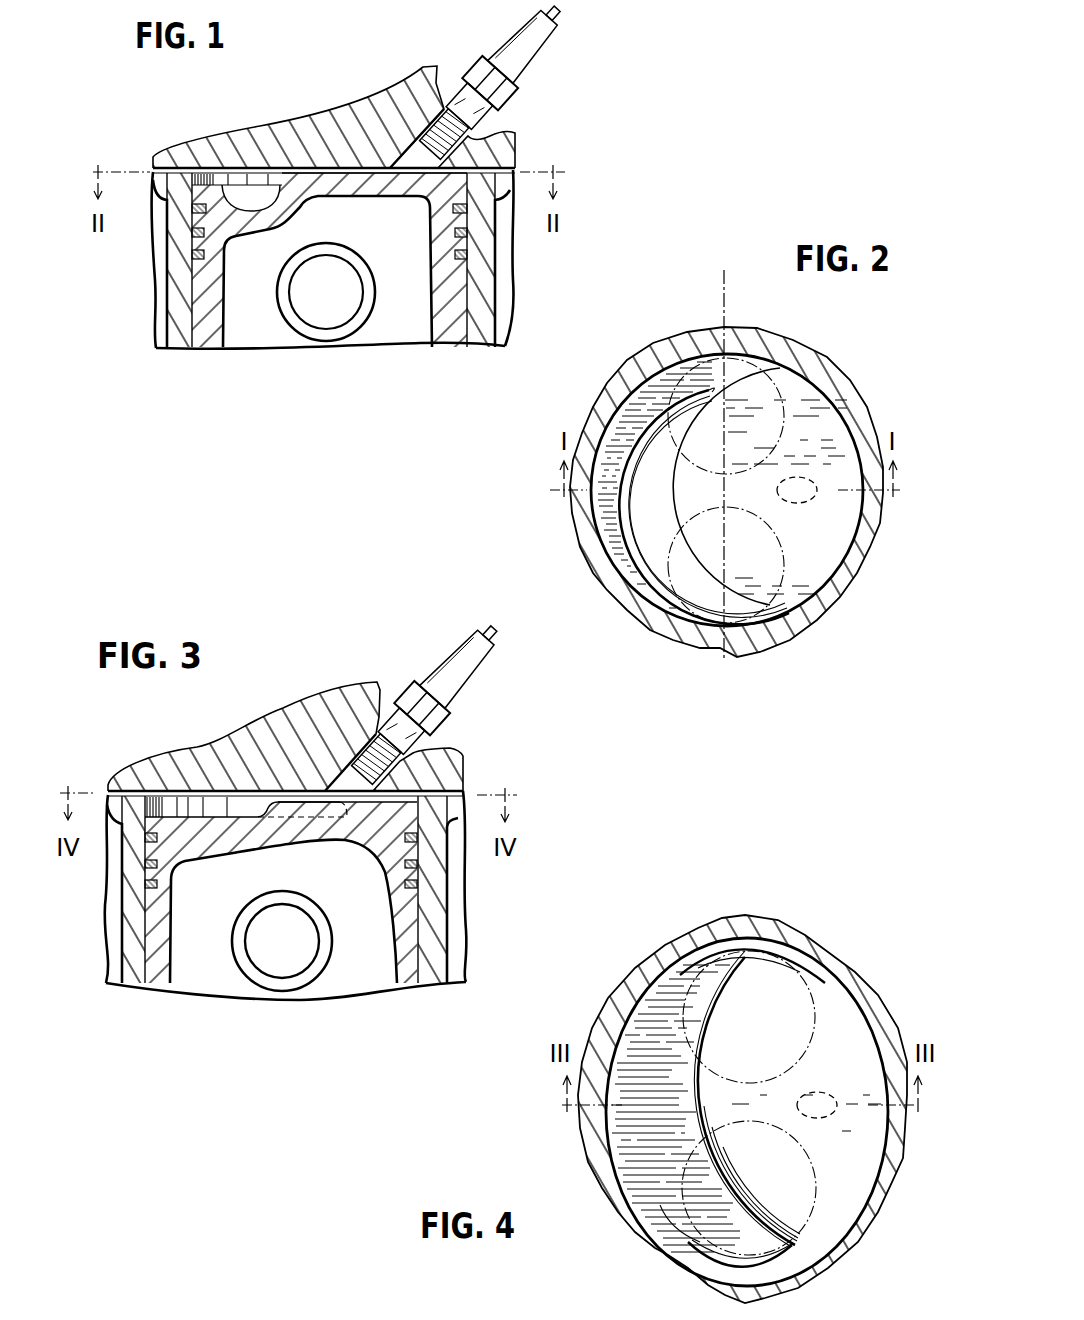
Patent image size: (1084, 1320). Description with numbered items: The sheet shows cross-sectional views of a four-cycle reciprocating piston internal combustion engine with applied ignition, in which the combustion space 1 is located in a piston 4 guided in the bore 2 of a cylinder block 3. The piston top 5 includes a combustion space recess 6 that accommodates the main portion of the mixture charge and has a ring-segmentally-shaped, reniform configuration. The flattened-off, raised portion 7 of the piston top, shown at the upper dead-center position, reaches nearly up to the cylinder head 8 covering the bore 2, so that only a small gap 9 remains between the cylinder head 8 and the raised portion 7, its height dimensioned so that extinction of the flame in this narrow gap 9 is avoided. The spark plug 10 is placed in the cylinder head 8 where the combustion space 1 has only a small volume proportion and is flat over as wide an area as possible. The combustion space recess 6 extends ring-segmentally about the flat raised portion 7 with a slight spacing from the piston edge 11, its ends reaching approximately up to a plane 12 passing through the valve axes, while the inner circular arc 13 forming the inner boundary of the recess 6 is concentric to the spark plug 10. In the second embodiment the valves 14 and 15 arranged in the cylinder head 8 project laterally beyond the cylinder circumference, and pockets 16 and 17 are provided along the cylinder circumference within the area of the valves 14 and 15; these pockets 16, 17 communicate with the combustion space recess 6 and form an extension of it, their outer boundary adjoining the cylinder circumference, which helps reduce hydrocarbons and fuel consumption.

In FIG. 1, the combustion space 1 is at (233, 193).
In FIG. 1, the bore 2 is at (422, 207).
In FIG. 3, the bore 2 is at (285, 893).
In FIG. 1, the cylinder block 3 is at (185, 333).
In FIG. 3, the cylinder block 3 is at (132, 967).
In FIG. 1, the piston 4 is at (208, 333).
In FIG. 3, the piston 4 is at (155, 967).
In FIG. 1, the piston top 5 is at (383, 190).
In FIG. 1, the combustion space recess 6 is at (258, 197).
In FIG. 3, the combustion space recess 6 is at (213, 803).
In FIG. 2, the combustion space recess 6 is at (643, 507).
In FIG. 4, the combustion space recess 6 is at (663, 1132).
In FIG. 1, the raised portion 7 is at (323, 172).
In FIG. 3, the raised portion 7 is at (280, 806).
In FIG. 2, the raised portion 7 is at (818, 555).
In FIG. 1, the cylinder head 8 is at (383, 118).
In FIG. 3, the cylinder head 8 is at (327, 710).
In FIG. 1, the gap 9 is at (350, 162).
In FIG. 3, the gap 9 is at (460, 762).
In FIG. 1, the spark plug 10 is at (505, 50).
In FIG. 3, the spark plug 10 is at (448, 673).
In FIG. 2, the piston edge 11 is at (590, 513).
In FIG. 2, the plane 12 is at (722, 295).
In FIG. 2, the inner circular arc 13 is at (683, 497).
In FIG. 4, the inner circular arc 13 is at (715, 1062).
In FIG. 4, the valve 14 is at (811, 1053).
In FIG. 4, the valve 15 is at (682, 1215).
In FIG. 4, the pocket 16 is at (765, 942).
In FIG. 4, the pocket 17 is at (732, 1260).